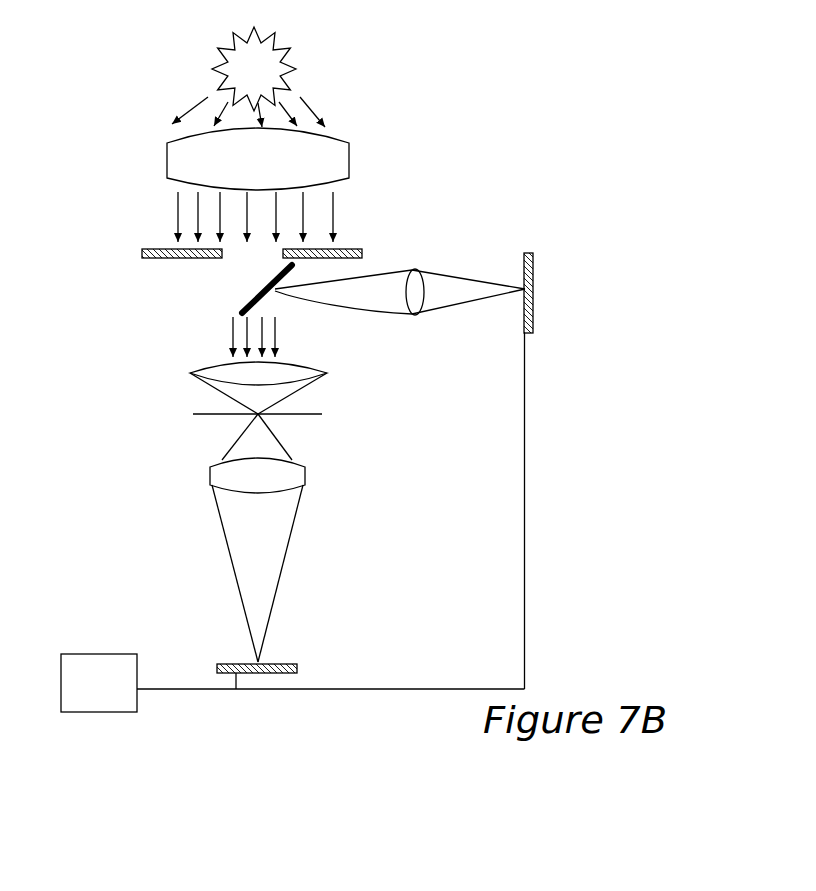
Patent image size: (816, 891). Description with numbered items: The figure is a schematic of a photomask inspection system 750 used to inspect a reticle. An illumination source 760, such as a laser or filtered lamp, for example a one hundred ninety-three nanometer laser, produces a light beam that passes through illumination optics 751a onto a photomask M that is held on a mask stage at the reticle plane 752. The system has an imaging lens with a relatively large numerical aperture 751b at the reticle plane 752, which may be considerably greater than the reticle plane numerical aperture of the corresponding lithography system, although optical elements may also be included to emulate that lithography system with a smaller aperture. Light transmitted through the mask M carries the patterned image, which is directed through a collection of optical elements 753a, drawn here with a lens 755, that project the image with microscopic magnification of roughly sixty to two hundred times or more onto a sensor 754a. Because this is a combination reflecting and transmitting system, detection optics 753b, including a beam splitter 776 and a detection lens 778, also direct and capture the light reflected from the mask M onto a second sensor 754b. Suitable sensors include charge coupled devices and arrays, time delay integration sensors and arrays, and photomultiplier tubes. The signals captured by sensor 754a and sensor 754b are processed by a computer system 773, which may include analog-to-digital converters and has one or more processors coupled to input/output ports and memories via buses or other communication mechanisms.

The inspection system 750 is at (376, 65).
The illumination source 760 is at (278, 44).
The illumination optics 751a is at (118, 380).
The beam splitter 776 is at (268, 292).
The detection optics 753b is at (400, 301).
The detection lens 778 is at (416, 293).
The sensor 754b is at (527, 253).
The numerical aperture 751b is at (290, 400).
The reticle plane 752 is at (184, 414).
The photomask M is at (305, 417).
The collection of optical elements 753a is at (247, 538).
The collection lens 755 is at (255, 558).
The sensor 754a is at (280, 662).
The computer system 773 is at (293, 522).